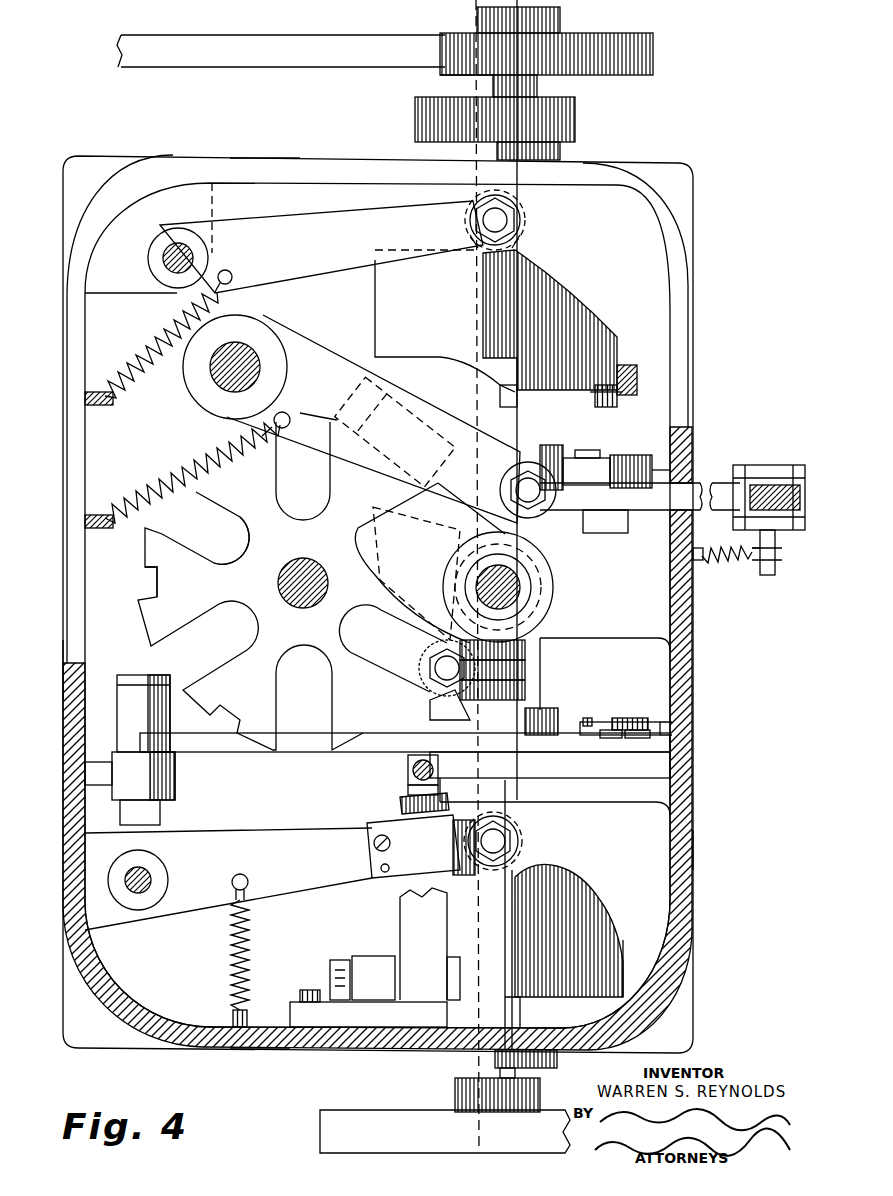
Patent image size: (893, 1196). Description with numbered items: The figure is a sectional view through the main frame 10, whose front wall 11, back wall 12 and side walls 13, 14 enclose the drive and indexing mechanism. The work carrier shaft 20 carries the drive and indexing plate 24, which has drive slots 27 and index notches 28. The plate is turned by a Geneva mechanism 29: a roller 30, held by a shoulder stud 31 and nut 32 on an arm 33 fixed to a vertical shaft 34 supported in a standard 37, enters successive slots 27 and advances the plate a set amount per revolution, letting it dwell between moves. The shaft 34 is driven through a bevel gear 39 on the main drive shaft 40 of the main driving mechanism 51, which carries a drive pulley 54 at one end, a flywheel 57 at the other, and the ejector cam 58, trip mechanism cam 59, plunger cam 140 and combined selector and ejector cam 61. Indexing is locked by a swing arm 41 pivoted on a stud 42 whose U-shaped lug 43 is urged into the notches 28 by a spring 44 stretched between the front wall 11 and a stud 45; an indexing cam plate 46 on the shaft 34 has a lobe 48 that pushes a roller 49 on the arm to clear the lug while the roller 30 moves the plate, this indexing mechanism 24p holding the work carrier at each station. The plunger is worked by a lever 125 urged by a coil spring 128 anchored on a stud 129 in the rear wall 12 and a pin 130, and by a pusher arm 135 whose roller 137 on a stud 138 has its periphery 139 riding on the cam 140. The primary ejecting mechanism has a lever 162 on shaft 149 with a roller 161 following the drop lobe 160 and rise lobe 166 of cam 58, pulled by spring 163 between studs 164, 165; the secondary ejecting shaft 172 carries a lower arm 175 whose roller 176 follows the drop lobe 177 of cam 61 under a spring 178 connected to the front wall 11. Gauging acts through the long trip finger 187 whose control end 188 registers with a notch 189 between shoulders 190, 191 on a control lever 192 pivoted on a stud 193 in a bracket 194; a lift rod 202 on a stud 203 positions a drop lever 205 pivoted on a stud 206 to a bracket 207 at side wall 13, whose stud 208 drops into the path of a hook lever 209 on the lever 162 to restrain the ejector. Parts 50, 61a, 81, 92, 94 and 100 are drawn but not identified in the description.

The main frame 10 is at (695, 332).
The front wall 11 is at (63, 650).
The back wall 12 is at (688, 842).
The side wall 13 is at (262, 1050).
The side wall 14 is at (264, 158).
The work carrier shaft 20 is at (307, 606).
The drive and indexing plate 24 is at (150, 622).
The indexing mechanism 24p is at (336, 362).
The drive slots 27 is at (238, 543).
The index notches 28 is at (150, 578).
The Geneva mechanism 29 is at (527, 668).
The roller 30 is at (428, 664).
The shoulder stud 31 is at (442, 700).
The nut 32 is at (425, 650).
The arm 33 is at (527, 684).
The shaft 34 is at (520, 586).
The standard 37 is at (620, 640).
The bevel gear 39 is at (527, 652).
The main drive shaft 40 is at (522, 1076).
The swing arm 41 is at (301, 346).
The stud 42 is at (218, 377).
The U-shaped lug 43 is at (388, 402).
The spring 44 is at (150, 486).
The stud 45 is at (290, 415).
The indexing cam plate 46 is at (552, 560).
The lobe 48 is at (398, 584).
The roller 49 is at (540, 511).
The pawl 50 is at (375, 560).
The main driving mechanism 51 is at (614, 94).
The drive pulley 54 is at (590, 40).
The flywheel 57 is at (321, 1131).
The ejector cam 58 is at (530, 998).
The trip mechanism cam 59 is at (550, 710).
The combined selector and ejector cam 61 is at (378, 270).
The link 61a is at (446, 365).
The gear 81 is at (565, 118).
The nut 92 is at (626, 368).
The block 94 is at (596, 396).
The follower 100 is at (508, 390).
The lever 125 is at (775, 484).
The coil spring 128 is at (742, 566).
The stud 129 is at (700, 566).
The pin or stud 130 is at (770, 560).
The pusher arm 135 is at (723, 489).
The roller 137 is at (636, 456).
The stud 138 is at (590, 457).
The periphery 139 is at (660, 467).
The plunger cam 140 is at (550, 455).
The shaft 149 is at (138, 895).
The drop lobe 160 is at (620, 966).
The roller 161 is at (521, 838).
The lever 162 is at (286, 888).
The spring 163 is at (232, 962).
The stud 164 is at (232, 1015).
The stud 165 is at (247, 878).
The rise lobe 166 is at (556, 871).
The shaft 172 is at (162, 260).
The lower arm 175 is at (298, 222).
The roller 176 is at (521, 220).
The drop lobe 177 is at (612, 328).
The spring 178 is at (150, 332).
The long trip finger 187 is at (633, 718).
The control end 188 is at (598, 720).
The notch 189 is at (640, 734).
The shoulder 190 is at (612, 734).
The shoulder 191 is at (665, 728).
The control lever 192 is at (302, 753).
The stud 193 is at (160, 676).
The bracket 194 is at (100, 792).
The lift rod 202 is at (412, 770).
The stud 203 is at (410, 790).
The drop lever 205 is at (423, 944).
The stud 206 is at (450, 1002).
The bracket 207 is at (295, 1006).
The stud 208 is at (418, 832).
The hook lever 209 is at (405, 800).